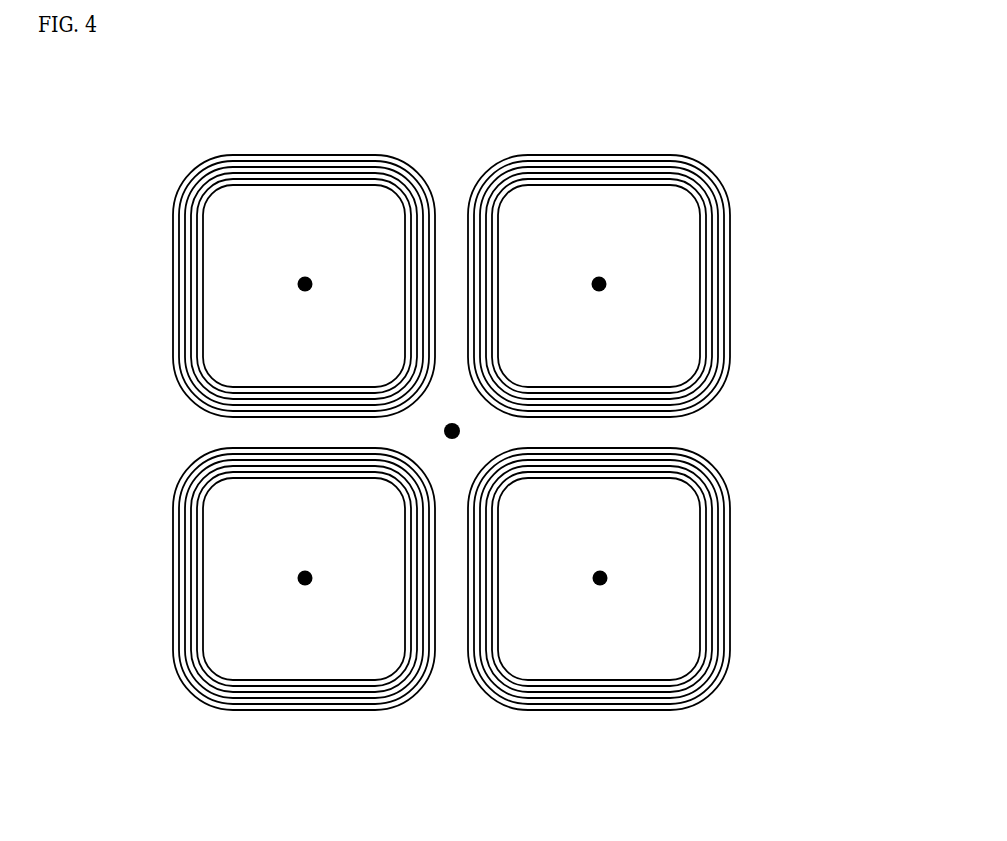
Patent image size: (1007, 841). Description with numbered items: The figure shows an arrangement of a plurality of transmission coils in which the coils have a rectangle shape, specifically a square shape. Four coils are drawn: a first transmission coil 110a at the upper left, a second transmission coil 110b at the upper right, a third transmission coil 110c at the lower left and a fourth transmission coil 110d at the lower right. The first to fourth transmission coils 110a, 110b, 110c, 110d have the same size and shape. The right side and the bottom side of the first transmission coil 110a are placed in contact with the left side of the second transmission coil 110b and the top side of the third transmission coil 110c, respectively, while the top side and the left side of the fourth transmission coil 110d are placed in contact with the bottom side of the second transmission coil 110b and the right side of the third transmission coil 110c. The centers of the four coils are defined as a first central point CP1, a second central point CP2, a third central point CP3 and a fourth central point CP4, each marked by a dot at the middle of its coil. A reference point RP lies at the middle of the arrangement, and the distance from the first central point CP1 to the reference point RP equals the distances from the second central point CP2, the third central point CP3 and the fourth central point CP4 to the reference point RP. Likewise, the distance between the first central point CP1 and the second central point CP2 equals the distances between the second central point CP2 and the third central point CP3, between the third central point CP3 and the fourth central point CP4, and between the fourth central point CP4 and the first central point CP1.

The first transmission coil 110a is at (305, 155).
The second transmission coil 110b is at (598, 155).
The third transmission coil 110c is at (305, 710).
The fourth transmission coil 110d is at (598, 710).
The first central point CP1 is at (305, 284).
The second central point CP2 is at (605, 284).
The third central point CP3 is at (305, 578).
The fourth central point CP4 is at (606, 578).
The reference point RP is at (460, 432).